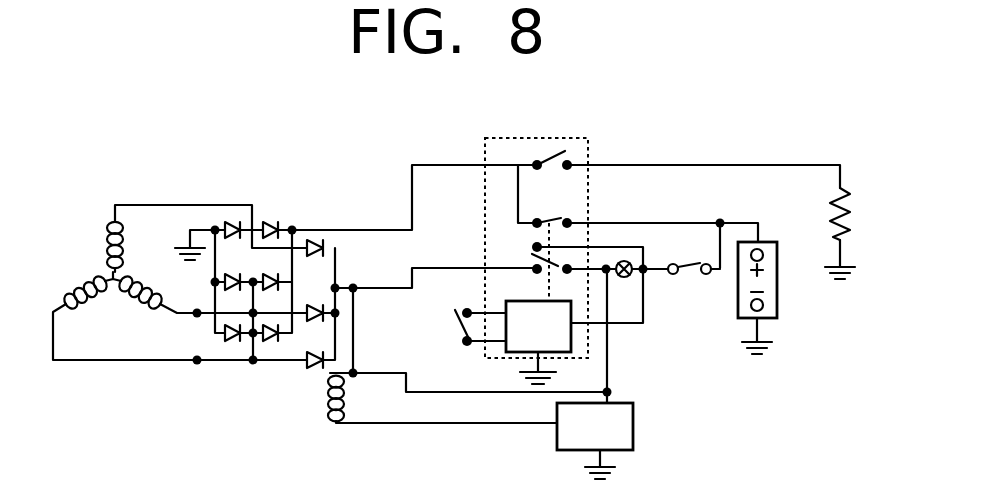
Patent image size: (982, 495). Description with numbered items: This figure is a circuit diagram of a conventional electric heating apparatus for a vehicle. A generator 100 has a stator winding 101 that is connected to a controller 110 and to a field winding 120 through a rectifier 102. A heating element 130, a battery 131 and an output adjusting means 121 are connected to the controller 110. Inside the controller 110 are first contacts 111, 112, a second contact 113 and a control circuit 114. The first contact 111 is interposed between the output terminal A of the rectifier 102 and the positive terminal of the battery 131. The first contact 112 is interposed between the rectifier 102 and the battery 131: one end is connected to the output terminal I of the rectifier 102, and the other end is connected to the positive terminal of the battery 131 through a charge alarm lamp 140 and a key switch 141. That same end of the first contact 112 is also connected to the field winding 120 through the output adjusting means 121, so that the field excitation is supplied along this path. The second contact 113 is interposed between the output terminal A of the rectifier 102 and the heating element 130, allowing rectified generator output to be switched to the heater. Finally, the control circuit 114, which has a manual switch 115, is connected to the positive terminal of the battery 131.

The generator 100 is at (82, 266).
The stator winding 101 is at (147, 279).
The rectifier 102 is at (271, 222).
The controller 110 is at (486, 213).
The first contact 111 is at (558, 212).
The first contact 112 is at (532, 251).
The second contact 113 is at (572, 153).
The control circuit 114 is at (571, 342).
The manual switch 115 is at (460, 322).
The field winding 120 is at (330, 398).
The output adjusting means 121 is at (635, 427).
The heating element 130 is at (828, 218).
The battery 131 is at (778, 288).
The charge alarm lamp 140 is at (627, 278).
The key switch 141 is at (688, 262).